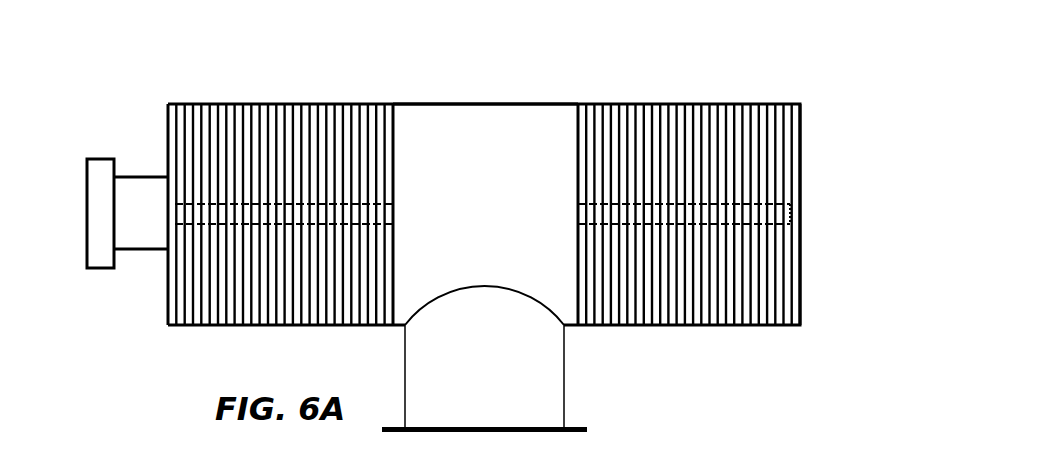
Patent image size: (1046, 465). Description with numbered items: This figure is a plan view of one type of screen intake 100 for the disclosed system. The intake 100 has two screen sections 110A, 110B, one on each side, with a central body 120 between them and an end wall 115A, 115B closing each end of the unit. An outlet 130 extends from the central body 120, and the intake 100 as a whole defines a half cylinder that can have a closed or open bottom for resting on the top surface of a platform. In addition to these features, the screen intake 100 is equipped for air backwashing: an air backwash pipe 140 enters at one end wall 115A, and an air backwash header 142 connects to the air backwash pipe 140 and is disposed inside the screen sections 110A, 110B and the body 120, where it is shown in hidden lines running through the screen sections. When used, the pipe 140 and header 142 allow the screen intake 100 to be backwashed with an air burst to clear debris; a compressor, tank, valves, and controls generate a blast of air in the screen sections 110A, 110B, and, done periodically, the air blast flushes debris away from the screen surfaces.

The screen intake 100 is at (866, 76).
The screen section 110A is at (277, 103).
The screen section 110B is at (723, 103).
The end wall 115A is at (168, 110).
The end wall 115B is at (801, 155).
The central body 120 is at (452, 103).
The outlet 130 is at (565, 393).
The air backwash pipe 140 is at (86, 165).
The air backwash header 142 is at (773, 226).